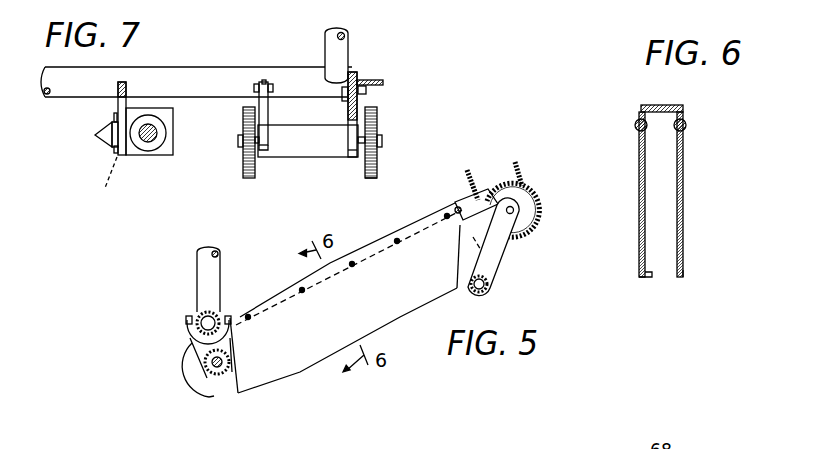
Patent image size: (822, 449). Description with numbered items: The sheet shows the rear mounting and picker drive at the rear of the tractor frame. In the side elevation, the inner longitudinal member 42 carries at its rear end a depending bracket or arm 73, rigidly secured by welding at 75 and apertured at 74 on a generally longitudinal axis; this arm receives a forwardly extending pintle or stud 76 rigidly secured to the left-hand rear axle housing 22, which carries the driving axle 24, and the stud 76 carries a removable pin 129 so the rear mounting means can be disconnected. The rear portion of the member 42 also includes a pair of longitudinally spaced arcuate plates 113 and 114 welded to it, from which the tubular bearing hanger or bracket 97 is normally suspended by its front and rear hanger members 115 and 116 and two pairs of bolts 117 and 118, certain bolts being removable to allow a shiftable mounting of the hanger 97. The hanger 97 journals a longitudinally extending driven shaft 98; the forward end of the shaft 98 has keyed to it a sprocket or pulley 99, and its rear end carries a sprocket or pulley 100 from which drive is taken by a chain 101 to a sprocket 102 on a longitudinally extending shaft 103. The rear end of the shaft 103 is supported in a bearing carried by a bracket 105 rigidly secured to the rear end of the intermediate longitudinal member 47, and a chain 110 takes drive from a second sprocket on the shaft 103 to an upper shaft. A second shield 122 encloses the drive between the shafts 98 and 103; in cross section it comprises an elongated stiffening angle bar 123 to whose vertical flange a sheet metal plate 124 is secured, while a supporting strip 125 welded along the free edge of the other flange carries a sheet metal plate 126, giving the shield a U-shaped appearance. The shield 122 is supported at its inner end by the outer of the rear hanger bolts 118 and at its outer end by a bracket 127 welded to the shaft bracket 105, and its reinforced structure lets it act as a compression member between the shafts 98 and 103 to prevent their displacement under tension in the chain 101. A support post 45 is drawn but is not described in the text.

In FIG. 7, the axle housing 22 is at (145, 152).
In FIG. 7, the driving axle 24 is at (150, 140).
In FIG. 7, the inner longitudinal member 42 is at (204, 72).
In FIG. 5, the inner longitudinal member 42 is at (202, 313).
In FIG. 7, the support post 45 is at (343, 48).
In FIG. 5, the support post 45 is at (203, 277).
In FIG. 5, the intermediate longitudinal member 47 is at (487, 291).
In FIG. 7, the depending bracket or arm 73 is at (118, 105).
In FIG. 7, the aperture 74 is at (102, 182).
In FIG. 7, the weld 75 is at (127, 88).
In FIG. 7, the pintle or stud 76 is at (97, 134).
In FIG. 7, the bearing hanger or bracket 97 is at (320, 148).
In FIG. 5, the bearing hanger or bracket 97 is at (209, 399).
In FIG. 7, the driven shaft 98 is at (367, 179).
In FIG. 5, the driven shaft 98 is at (200, 385).
In FIG. 7, the sprocket or pulley 99 is at (250, 178).
In FIG. 7, the sprocket or pulley 100 is at (376, 120).
In FIG. 5, the chain 101 is at (537, 227).
In FIG. 5, the sprocket 102 is at (530, 213).
In FIG. 5, the longitudinally extending shaft 103 is at (514, 209).
In FIG. 5, the bracket 105 is at (499, 255).
In FIG. 5, the chain 110 is at (520, 165).
In FIG. 7, the arcuate plate 113 is at (263, 88).
In FIG. 5, the arcuate plate 113 is at (193, 335).
In FIG. 7, the arcuate plate 114 is at (354, 77).
In FIG. 7, the front hanger member 115 is at (267, 150).
In FIG. 5, the front hanger member 115 is at (207, 348).
In FIG. 7, the rear hanger member 116 is at (348, 153).
In FIG. 7, the bolts 117 is at (256, 86).
In FIG. 5, the bolts 117 is at (186, 320).
In FIG. 7, the bolts 118 is at (367, 89).
In FIG. 6, the shield 122 is at (690, 259).
In FIG. 5, the shield 122 is at (300, 378).
In FIG. 7, the angle bar 123 is at (375, 82).
In FIG. 6, the angle bar 123 is at (661, 105).
In FIG. 6, the sheet metal plate 124 is at (640, 160).
In FIG. 6, the supporting strip 125 is at (675, 127).
In FIG. 6, the sheet metal plate 126 is at (684, 197).
In FIG. 5, the bracket 127 is at (459, 205).
In FIG. 7, the removable pin 129 is at (115, 156).